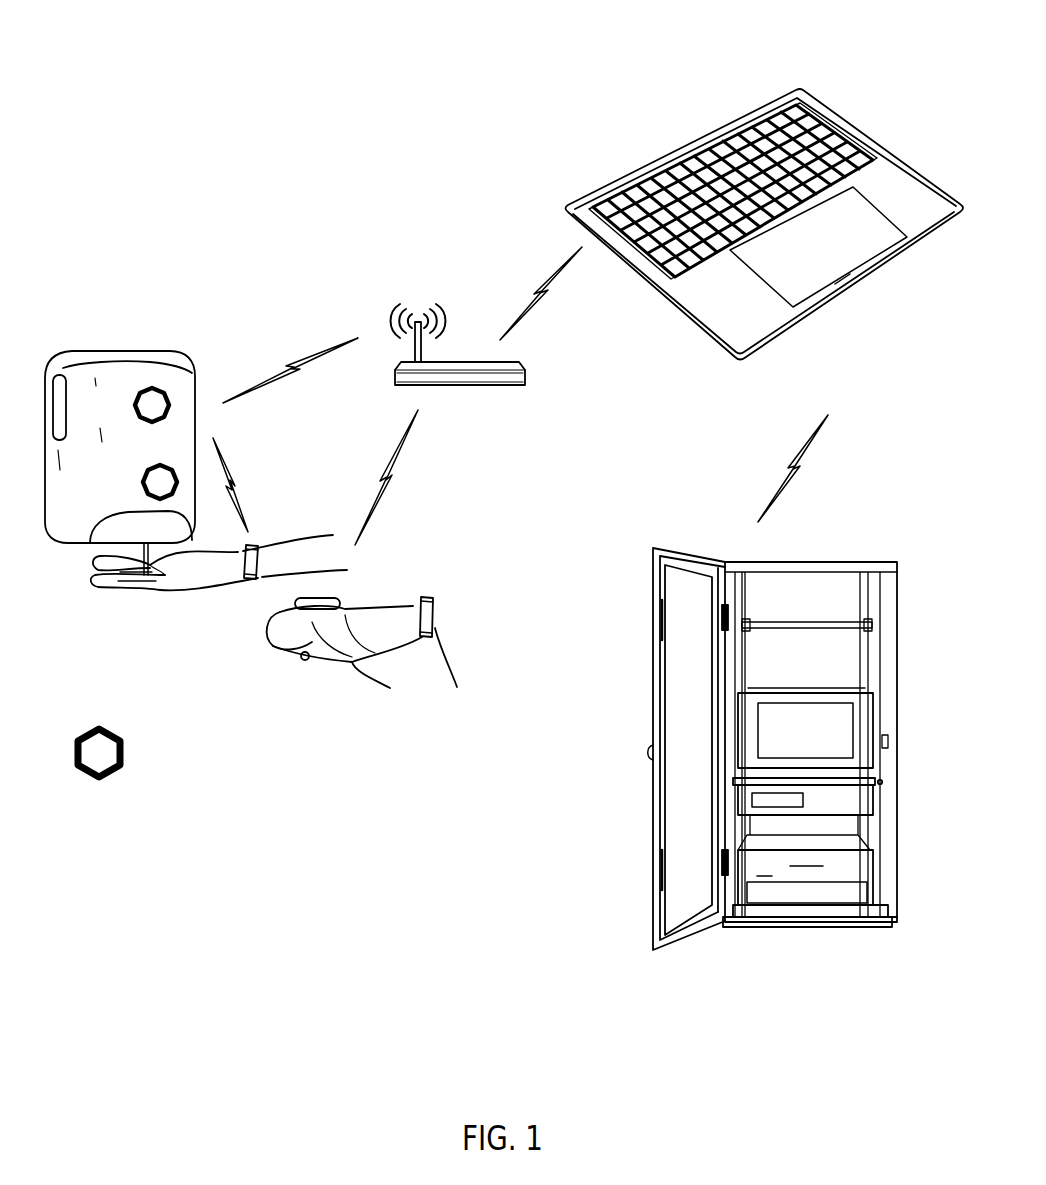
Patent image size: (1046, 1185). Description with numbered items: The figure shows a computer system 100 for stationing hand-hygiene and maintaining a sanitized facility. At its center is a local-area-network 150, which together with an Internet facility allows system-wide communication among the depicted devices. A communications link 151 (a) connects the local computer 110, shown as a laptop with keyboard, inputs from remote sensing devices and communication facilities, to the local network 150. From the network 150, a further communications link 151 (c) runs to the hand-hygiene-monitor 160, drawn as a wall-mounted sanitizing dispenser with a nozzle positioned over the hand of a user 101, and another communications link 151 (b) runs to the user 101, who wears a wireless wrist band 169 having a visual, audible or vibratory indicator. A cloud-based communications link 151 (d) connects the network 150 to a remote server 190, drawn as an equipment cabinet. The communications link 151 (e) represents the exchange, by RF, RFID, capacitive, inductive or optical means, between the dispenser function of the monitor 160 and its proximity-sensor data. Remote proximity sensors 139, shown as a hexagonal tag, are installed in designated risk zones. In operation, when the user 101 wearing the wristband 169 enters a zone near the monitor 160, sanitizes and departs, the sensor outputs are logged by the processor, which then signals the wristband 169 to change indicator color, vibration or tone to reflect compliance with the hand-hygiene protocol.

The system 100 is at (522, 36).
The computer processor 110 is at (853, 123).
The local-area-network 150 is at (460, 367).
The communications link 151 is at (540, 292).
The hand-hygiene-monitor 160 is at (109, 350).
The wireless wrist band 169 is at (257, 581).
The user 101 is at (436, 633).
The remote server 190 is at (840, 560).
The remote proximity sensors 139 is at (124, 753).